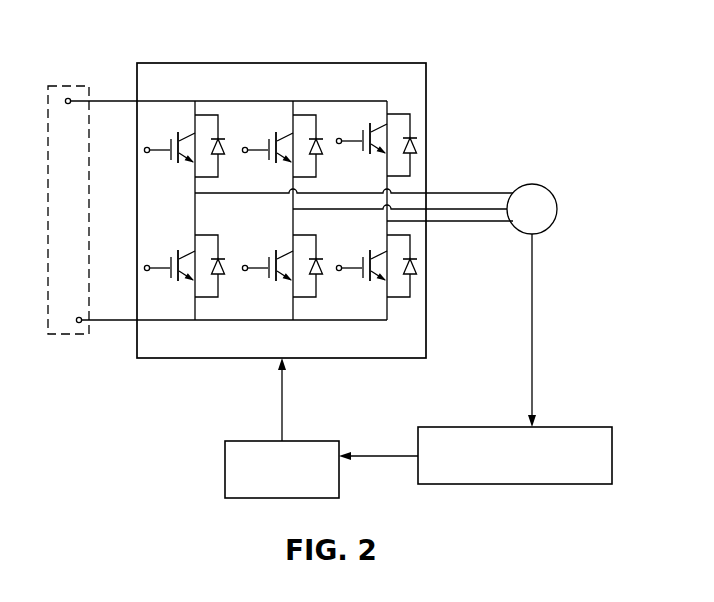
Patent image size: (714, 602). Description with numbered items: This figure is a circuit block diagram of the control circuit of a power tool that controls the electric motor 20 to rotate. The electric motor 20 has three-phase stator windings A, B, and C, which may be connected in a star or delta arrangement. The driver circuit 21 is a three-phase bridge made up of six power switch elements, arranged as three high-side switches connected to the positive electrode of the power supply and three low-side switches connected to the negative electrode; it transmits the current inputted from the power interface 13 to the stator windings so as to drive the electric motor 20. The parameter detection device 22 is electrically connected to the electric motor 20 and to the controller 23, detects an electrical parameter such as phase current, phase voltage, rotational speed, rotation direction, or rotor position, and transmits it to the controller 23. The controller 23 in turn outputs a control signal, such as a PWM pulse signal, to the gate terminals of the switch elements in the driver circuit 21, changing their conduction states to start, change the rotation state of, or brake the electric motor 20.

The power interface 13 is at (68, 85).
The driver circuit 21 is at (280, 63).
The electric motor 20 is at (531, 184).
The parameter detection device 22 is at (553, 427).
The controller 23 is at (307, 441).